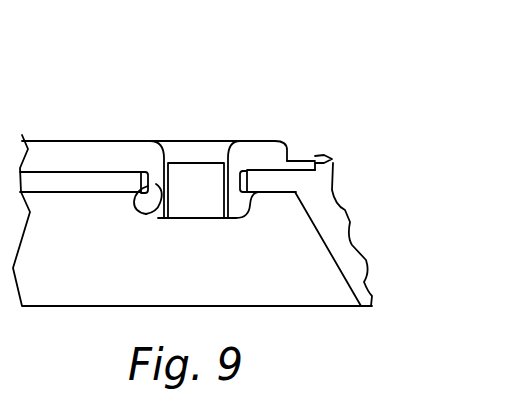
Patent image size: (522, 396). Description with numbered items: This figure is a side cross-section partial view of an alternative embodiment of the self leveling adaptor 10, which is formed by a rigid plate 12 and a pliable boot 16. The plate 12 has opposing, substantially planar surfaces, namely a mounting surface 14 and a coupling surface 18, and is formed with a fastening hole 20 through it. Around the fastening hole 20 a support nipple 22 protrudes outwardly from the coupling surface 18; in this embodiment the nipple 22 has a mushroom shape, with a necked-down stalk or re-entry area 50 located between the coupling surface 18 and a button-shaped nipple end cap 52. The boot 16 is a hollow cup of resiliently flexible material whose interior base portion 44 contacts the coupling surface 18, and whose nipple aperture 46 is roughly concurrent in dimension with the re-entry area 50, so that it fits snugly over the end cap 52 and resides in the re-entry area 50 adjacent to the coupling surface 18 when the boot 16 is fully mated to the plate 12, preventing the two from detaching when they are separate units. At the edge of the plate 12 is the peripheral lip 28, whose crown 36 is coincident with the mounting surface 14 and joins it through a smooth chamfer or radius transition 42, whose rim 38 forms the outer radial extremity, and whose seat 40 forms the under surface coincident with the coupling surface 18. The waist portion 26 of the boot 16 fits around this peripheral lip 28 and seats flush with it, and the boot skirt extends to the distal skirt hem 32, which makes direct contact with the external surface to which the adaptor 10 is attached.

The self leveling adaptor 10 is at (69, 102).
The rigid plate 12 is at (58, 157).
The mounting surface 14 is at (110, 141).
The pliable boot 16 is at (353, 212).
The coupling surface 18 is at (28, 213).
The fastening hole 20 is at (183, 148).
The support nipple 22 is at (140, 215).
The waist portion 26 is at (332, 158).
The peripheral lip 28 is at (298, 157).
The skirt hem 32 is at (371, 306).
The peripheral lip crown 36 is at (305, 158).
The rim 38 is at (331, 158).
The seat 40 is at (284, 175).
The transition 42 is at (283, 152).
The interior base portion 44 is at (68, 172).
The nipple aperture 46 is at (135, 182).
The re-entry area 50 is at (150, 215).
The nipple end cap 52 is at (143, 216).